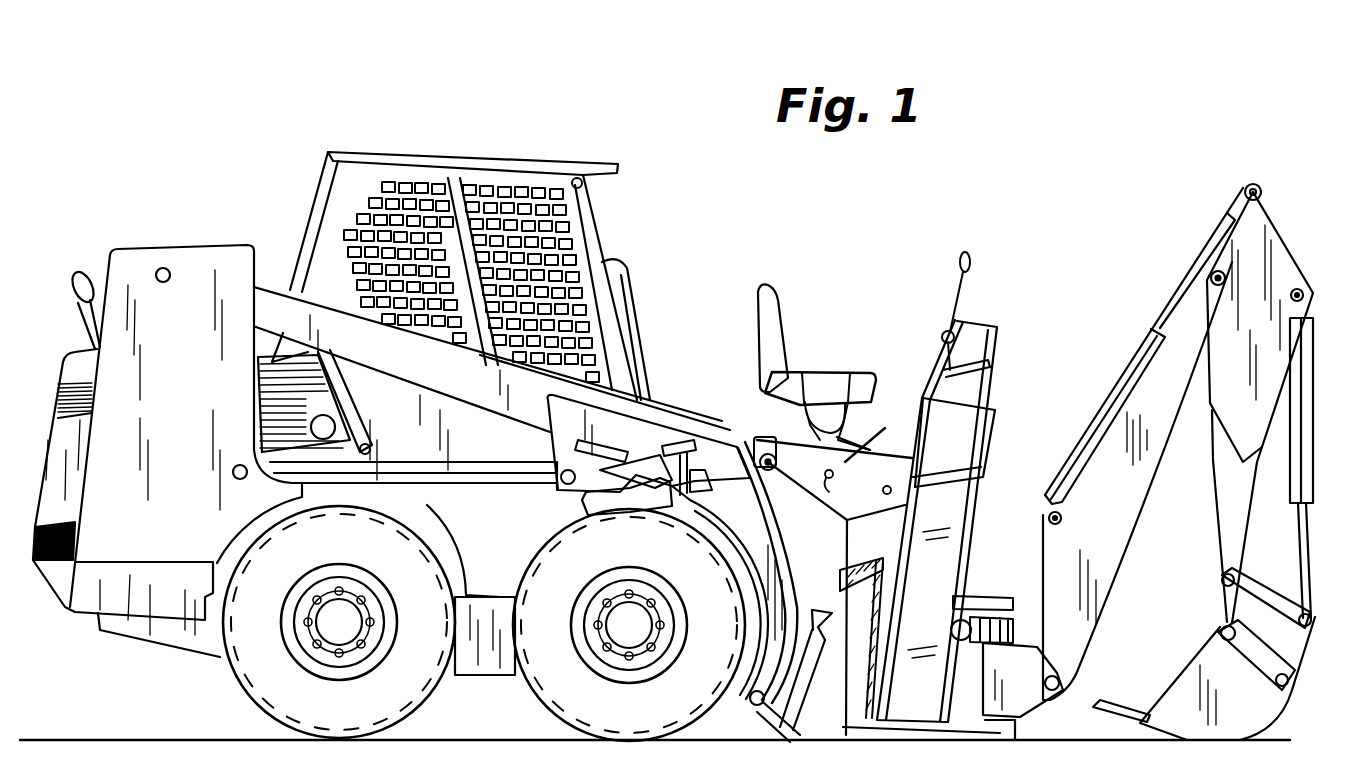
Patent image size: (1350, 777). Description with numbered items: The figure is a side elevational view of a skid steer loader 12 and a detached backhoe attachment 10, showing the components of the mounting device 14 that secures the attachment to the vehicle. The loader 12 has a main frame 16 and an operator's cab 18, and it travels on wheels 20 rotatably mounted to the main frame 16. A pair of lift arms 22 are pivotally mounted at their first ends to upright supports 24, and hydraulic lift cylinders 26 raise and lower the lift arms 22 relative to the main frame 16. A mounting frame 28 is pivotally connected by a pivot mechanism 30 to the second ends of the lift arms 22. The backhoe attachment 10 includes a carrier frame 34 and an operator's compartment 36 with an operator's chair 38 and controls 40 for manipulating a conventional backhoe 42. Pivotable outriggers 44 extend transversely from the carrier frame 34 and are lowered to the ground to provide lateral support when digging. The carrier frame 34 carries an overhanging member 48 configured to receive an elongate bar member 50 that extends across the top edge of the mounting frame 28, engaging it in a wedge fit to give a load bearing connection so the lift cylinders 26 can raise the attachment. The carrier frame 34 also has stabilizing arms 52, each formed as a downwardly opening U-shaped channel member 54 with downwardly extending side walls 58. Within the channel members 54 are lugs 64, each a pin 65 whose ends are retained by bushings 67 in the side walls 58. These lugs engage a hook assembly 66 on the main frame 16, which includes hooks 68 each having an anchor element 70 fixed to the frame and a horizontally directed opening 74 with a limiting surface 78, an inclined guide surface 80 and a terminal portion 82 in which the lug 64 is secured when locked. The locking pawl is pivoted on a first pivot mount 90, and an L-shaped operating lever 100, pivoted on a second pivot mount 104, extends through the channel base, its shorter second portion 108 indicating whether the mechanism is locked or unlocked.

The backhoe attachment 10 is at (1110, 372).
The skid steer loader 12 is at (484, 151).
The mounting device 14 is at (727, 422).
The main frame 16 is at (466, 668).
The operator's cab 18 is at (585, 214).
The wheels 20 is at (255, 705).
The lift arms 22 is at (275, 300).
The upright supports 24 is at (140, 262).
The hydraulic lift cylinders 26 is at (490, 484).
The mounting frame 28 is at (806, 698).
The pivot mechanism 30 is at (752, 704).
The carrier frame 34 is at (845, 524).
The operator's compartment 36 is at (918, 392).
The operator's chair 38 is at (785, 303).
The controls 40 is at (976, 300).
The backhoe 42 is at (1290, 262).
The pivotable outriggers 44 is at (940, 580).
The overhanging member 48 is at (861, 562).
The elongate bar member 50 is at (818, 606).
The stabilizing arms 52 is at (813, 461).
The channel member 54 is at (882, 446).
The side walls 58 is at (930, 462).
The lugs 64 is at (728, 480).
The pin 65 is at (766, 452).
The hook assembly 66 is at (668, 450).
The bushings 67 is at (782, 492).
The hooks 68 is at (700, 480).
The anchor element 70 is at (582, 502).
The horizontally directed opening 74 is at (600, 452).
The limiting surface 78 is at (640, 485).
The inclined guide surface 80 is at (660, 465).
The terminal portion 82 is at (690, 462).
The first pivot mount 90 is at (832, 482).
The operating lever 100 is at (811, 372).
The second pivot mount 104 is at (892, 494).
The second portion 108 is at (851, 372).